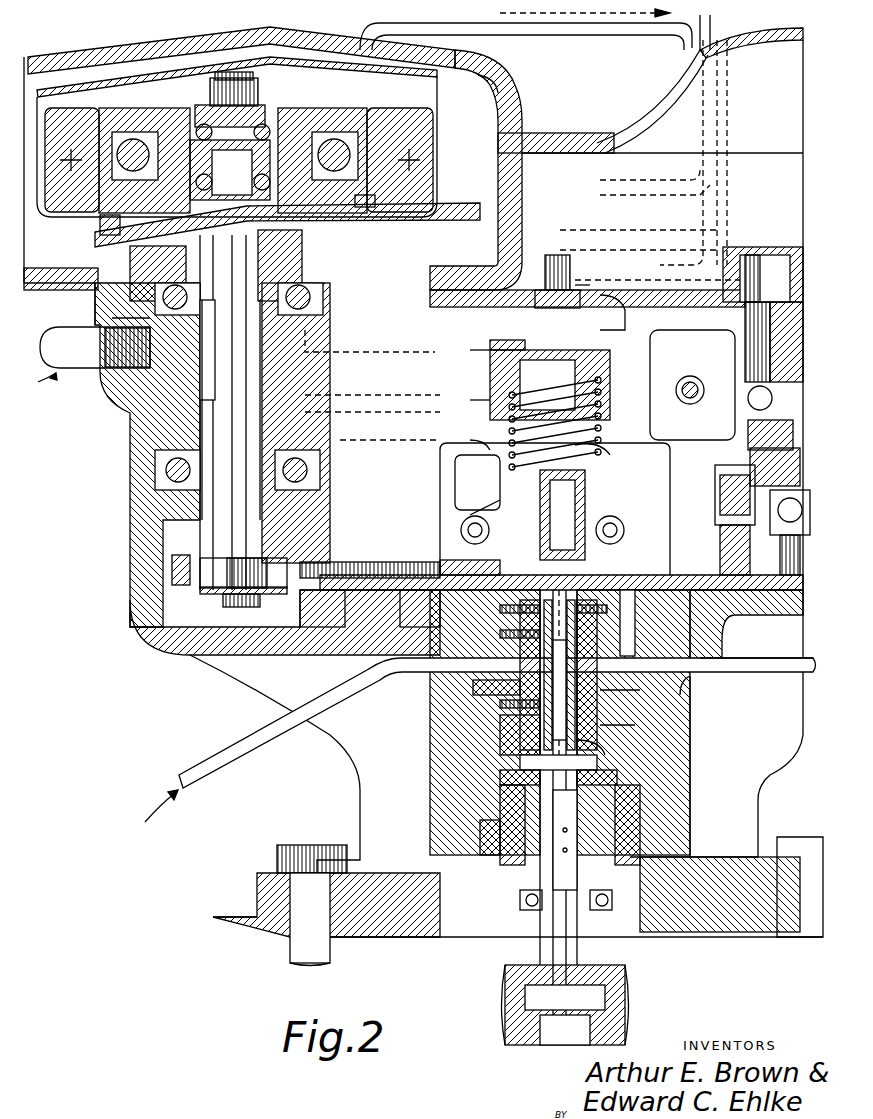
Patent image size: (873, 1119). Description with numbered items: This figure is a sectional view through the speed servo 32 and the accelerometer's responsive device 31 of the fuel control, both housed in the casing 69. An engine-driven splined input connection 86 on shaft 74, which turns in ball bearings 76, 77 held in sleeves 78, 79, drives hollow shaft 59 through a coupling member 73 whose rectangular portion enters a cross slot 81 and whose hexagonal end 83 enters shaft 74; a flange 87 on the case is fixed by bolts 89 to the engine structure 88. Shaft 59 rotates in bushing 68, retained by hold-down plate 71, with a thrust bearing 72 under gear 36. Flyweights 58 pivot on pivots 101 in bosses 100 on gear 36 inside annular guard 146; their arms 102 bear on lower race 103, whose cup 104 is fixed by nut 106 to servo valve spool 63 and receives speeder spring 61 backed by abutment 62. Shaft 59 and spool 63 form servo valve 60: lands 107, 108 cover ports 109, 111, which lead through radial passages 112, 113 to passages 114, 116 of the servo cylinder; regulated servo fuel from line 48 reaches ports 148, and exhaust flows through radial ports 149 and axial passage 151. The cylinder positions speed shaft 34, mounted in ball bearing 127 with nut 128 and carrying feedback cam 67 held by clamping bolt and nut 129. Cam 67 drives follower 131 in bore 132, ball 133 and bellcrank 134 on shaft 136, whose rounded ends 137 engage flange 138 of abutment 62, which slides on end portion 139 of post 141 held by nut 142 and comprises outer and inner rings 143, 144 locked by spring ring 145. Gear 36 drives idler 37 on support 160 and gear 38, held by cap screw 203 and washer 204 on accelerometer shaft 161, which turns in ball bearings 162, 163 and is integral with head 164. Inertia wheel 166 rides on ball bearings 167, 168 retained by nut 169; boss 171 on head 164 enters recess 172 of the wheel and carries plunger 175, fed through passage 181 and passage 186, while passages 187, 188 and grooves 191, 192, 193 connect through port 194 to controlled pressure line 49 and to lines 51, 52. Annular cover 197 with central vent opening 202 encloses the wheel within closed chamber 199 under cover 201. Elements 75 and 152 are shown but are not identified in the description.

The responsive device 31 is at (127, 425).
The speed servo 32 is at (755, 750).
The speed shaft 34 is at (786, 508).
The gear 36 is at (420, 562).
The idler 37 is at (325, 560).
The gear 38 is at (175, 575).
The line 48 is at (245, 740).
The controlled pressure line 49 is at (578, 28).
The line 51 is at (695, 38).
The line 52 is at (742, 40).
The flyweights 58 is at (445, 475).
The hollow shaft 59 is at (630, 608).
The servo valve 60 is at (515, 762).
The speeder spring 61 is at (510, 462).
The abutment 62 is at (602, 293).
The servo valve spool 63 is at (525, 688).
The speed feedback cam 67 is at (775, 455).
The bushing 68 is at (500, 625).
The housing 69 is at (305, 660).
The hold-down plate 71 is at (416, 608).
The thrust bearing 72 is at (500, 600).
The noncircular coupling member 73 is at (501, 825).
The shaft 74 is at (500, 830).
The retainer 75 is at (498, 780).
The ball bearing 76 is at (615, 778).
The ball bearing 77 is at (590, 930).
The sleeve 78 is at (632, 795).
The sleeve 79 is at (630, 935).
The cross slot 81 is at (601, 749).
The square or hexagonal end 83 is at (558, 840).
The splined input connection 86 is at (628, 995).
The flange 87 is at (257, 888).
The engine structure 88 is at (225, 935).
The bolts 89 is at (315, 845).
The bosses 100 is at (452, 545).
The pivots 101 is at (470, 518).
The arms 102 is at (485, 498).
The lower race 103 is at (610, 512).
The cup 104 is at (605, 462).
The nut 106 is at (600, 425).
The land 107 is at (506, 637).
The land 108 is at (505, 733).
The port 109 is at (505, 610).
The port 111 is at (505, 706).
The radial passage 112 is at (620, 683).
The radial passage 113 is at (626, 725).
The passage 114 is at (710, 678).
The passage 116 is at (665, 696).
The ball bearing 127 is at (737, 554).
The nut 128 is at (735, 495).
The clamping bolt and nut 129 is at (780, 560).
The follower 131 is at (775, 247).
The bore 132 is at (562, 398).
The ball 133 is at (745, 385).
The bellcrank 134 is at (708, 432).
The shaft 136 is at (708, 392).
The rounded ends 137 is at (550, 385).
The flange 138 is at (460, 400).
The cylindrical end portion 139 is at (602, 395).
The post 141 is at (560, 255).
The nut 142 is at (590, 280).
The outer ring 143 is at (460, 365).
The inner ring 144 is at (500, 400).
The expanding spring ring 145 is at (610, 330).
The annular guard 146 is at (460, 440).
The ports 148 is at (486, 686).
The radial ports 149 is at (557, 603).
The axial passage 151 is at (555, 690).
The port 152 is at (748, 255).
The support 160 is at (322, 608).
The accelerometer shaft 161 is at (265, 98).
The ball bearing 162 is at (165, 473).
The ball bearing 163 is at (158, 290).
The head 164 is at (80, 242).
The inertia wheel 166 is at (72, 100).
The ball bearing 167 is at (250, 76).
The ball bearing 168 is at (270, 140).
The nut 169 is at (230, 139).
The boss 171 is at (108, 100).
The recess 172 is at (152, 112).
The plunger 175 is at (72, 165).
The passage 181 is at (170, 206).
The passage 186 is at (247, 210).
The passage 187 is at (196, 258).
The passage 188 is at (285, 258).
The groove 191 is at (198, 370).
The groove 192 is at (198, 392).
The groove 193 is at (200, 415).
The port 194 is at (125, 309).
The annular cover 197 is at (436, 120).
The closed chamber 199 is at (515, 110).
The cover 201 is at (504, 74).
The central opening 202 is at (284, 40).
The cap screw 203 is at (260, 605).
The washer 204 is at (215, 600).